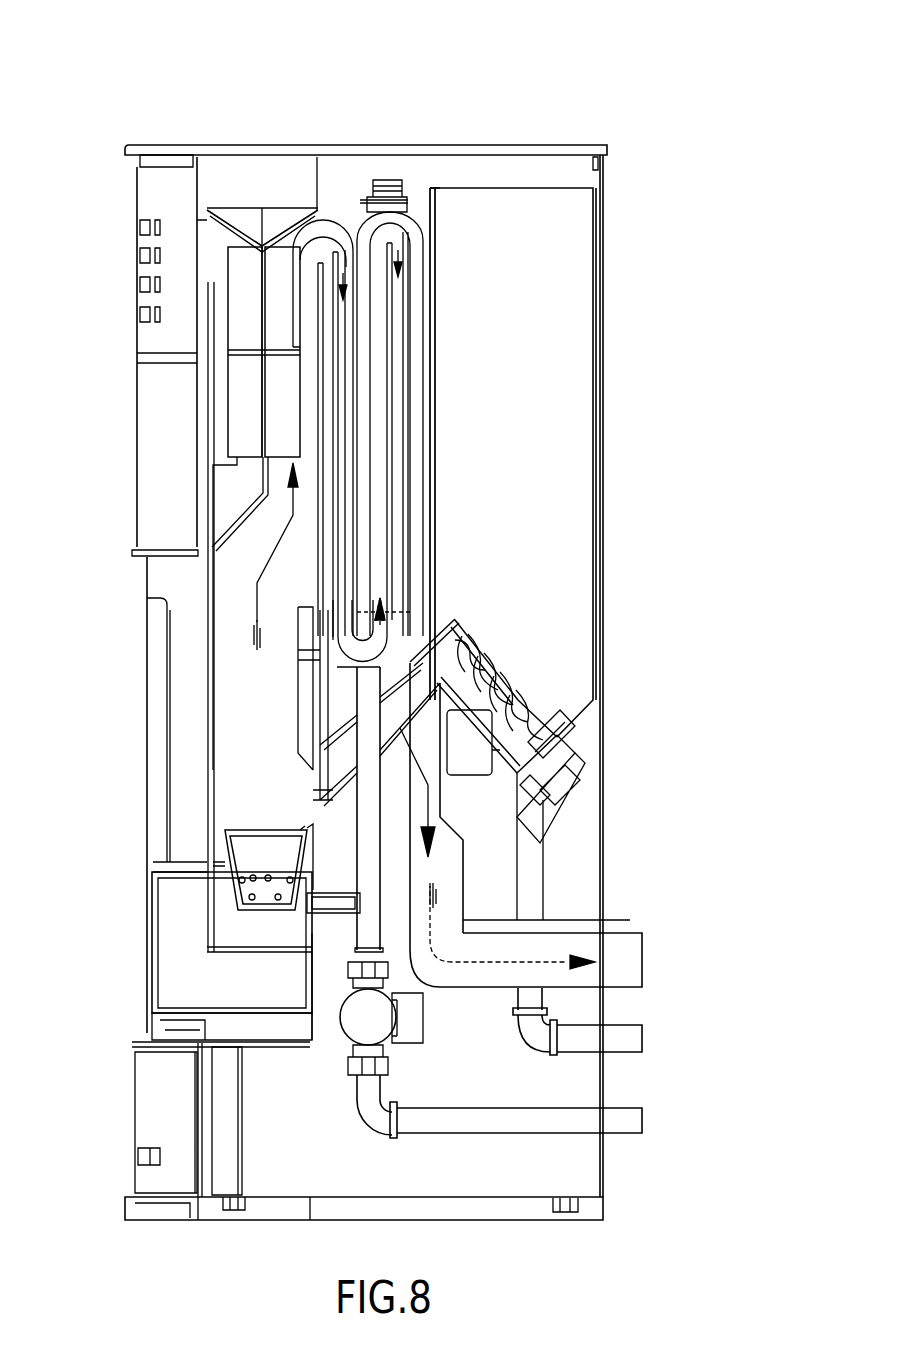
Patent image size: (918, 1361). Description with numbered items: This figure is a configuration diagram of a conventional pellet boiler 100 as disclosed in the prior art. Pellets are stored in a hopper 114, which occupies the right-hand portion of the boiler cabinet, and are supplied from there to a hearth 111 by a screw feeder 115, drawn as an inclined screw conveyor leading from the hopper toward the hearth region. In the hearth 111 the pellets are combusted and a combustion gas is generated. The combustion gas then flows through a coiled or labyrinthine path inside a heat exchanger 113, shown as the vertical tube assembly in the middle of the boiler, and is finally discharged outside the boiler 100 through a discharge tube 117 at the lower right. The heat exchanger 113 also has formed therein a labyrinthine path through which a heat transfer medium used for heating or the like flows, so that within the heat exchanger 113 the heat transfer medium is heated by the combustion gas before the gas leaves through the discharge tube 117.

The pellet boiler 100 is at (116, 86).
The hearth 111 is at (263, 847).
The heat exchanger 113 is at (478, 272).
The hopper 114 is at (532, 543).
The screw feeder 115 is at (473, 680).
The discharge tube 117 is at (620, 960).